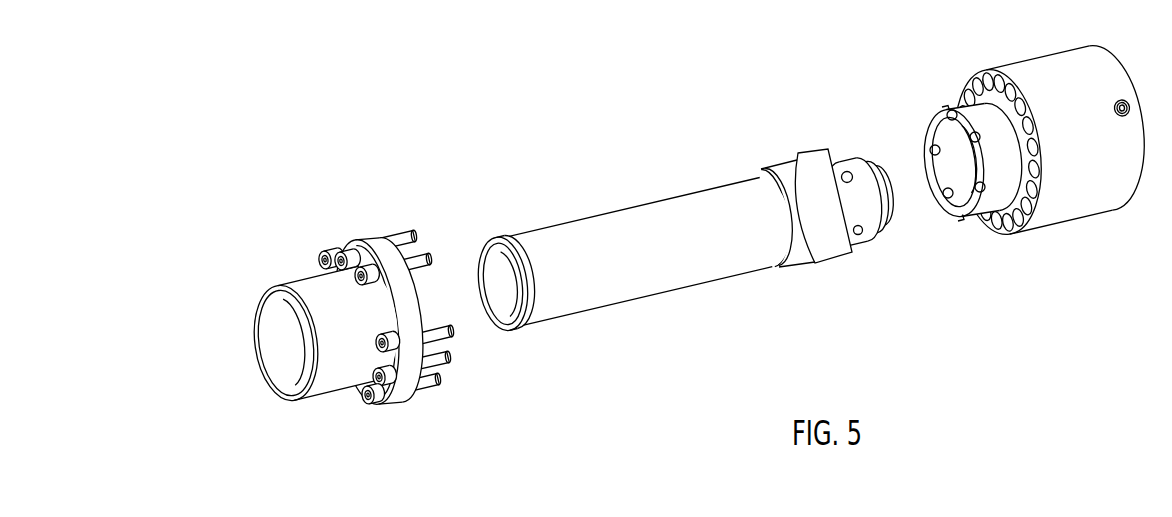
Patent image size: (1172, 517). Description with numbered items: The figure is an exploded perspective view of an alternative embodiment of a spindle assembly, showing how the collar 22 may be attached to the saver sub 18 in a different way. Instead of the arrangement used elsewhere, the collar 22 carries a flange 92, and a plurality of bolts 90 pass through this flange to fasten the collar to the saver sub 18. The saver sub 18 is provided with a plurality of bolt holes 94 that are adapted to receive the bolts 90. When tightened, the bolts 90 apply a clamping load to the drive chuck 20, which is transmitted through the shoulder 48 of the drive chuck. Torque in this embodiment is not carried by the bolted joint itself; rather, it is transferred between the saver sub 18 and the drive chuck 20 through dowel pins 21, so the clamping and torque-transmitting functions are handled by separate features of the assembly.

The saver sub 18 is at (1031, 166).
The drive chuck 20 is at (652, 223).
The dowel pins 21 is at (863, 237).
The collar 22 is at (313, 283).
The shoulder 48 is at (757, 176).
The bolts 90 is at (447, 366).
The flange 92 is at (405, 238).
The bolt holes 94 is at (1038, 193).